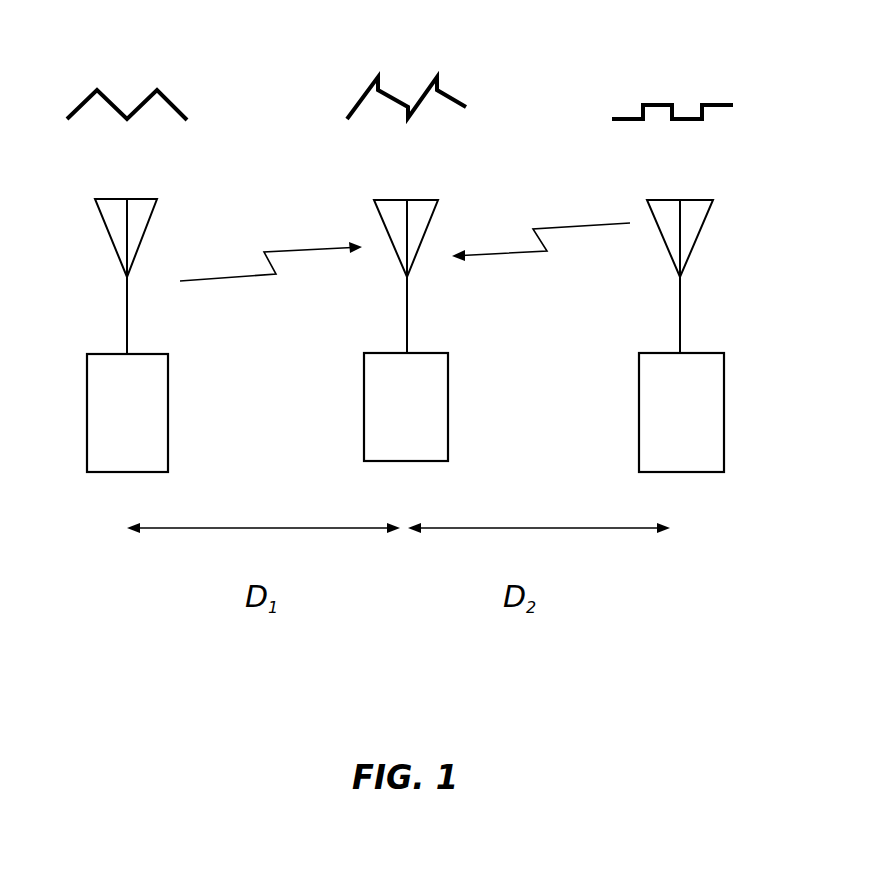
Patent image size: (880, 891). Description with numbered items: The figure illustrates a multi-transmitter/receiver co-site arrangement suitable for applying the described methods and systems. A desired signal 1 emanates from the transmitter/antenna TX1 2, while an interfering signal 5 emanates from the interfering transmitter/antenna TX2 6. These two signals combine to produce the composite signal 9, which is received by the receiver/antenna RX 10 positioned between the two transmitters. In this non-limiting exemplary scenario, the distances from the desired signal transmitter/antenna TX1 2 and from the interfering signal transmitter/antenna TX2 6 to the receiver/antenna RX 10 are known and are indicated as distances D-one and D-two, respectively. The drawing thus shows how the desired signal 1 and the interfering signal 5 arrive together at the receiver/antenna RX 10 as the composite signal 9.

The desired signal 1 is at (167, 98).
The composite signal 9 is at (460, 92).
The interfering signal 5 is at (725, 103).
The transmitter/antenna TX1 2 is at (84, 455).
The receiver/antenna RX 10 is at (364, 385).
The interfering transmitter/antenna TX2 6 is at (638, 392).